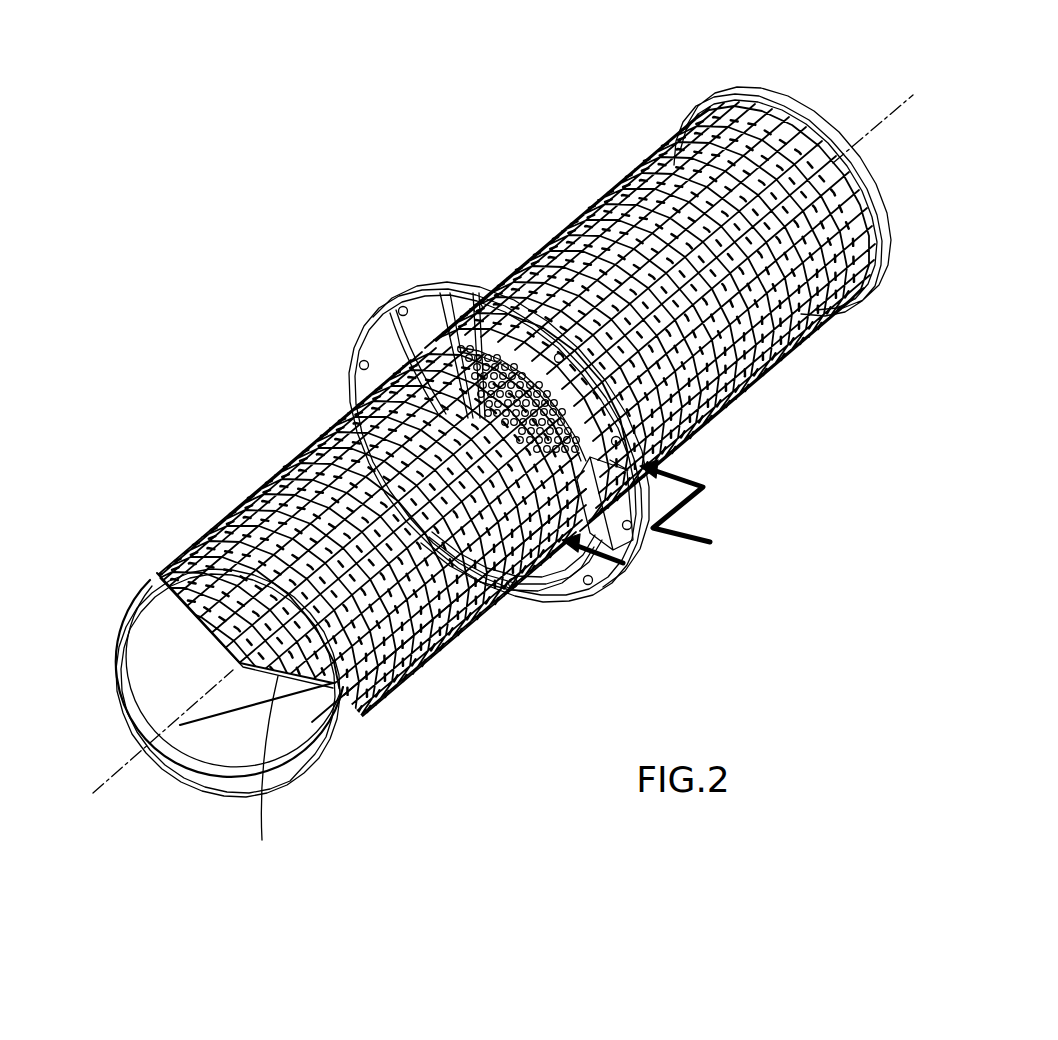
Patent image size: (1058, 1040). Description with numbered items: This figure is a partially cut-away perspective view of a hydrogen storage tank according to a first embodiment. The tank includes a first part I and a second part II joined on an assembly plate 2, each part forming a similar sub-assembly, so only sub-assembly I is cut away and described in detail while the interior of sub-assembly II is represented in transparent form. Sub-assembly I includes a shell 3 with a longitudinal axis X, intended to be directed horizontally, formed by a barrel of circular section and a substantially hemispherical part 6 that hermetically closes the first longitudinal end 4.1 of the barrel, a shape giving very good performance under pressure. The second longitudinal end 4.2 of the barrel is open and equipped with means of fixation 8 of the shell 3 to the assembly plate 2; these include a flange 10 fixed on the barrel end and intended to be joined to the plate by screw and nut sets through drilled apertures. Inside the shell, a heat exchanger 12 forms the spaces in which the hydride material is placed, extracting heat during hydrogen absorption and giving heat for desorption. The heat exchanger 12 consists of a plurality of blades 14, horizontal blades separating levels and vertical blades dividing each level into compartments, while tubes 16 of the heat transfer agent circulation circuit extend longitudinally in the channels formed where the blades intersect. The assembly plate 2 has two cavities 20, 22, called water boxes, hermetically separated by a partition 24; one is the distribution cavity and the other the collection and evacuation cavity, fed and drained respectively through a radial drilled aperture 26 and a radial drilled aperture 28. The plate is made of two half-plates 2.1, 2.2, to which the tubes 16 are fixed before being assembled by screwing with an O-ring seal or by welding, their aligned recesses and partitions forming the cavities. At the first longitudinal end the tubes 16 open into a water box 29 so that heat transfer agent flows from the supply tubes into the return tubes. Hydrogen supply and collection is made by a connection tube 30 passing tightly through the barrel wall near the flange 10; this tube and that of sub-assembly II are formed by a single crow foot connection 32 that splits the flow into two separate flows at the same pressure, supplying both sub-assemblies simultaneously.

The longitudinal axis X is at (912, 95).
The first part I is at (193, 452).
The second part II is at (860, 343).
The assembly plate 2 is at (460, 270).
The half-plate 2.1 is at (643, 483).
The half-plate 2.2 is at (653, 475).
The shell 3 is at (138, 562).
The first longitudinal end 4.1 is at (320, 763).
The second longitudinal end 4.2 is at (417, 368).
The substantially hemispherical part 6 is at (203, 773).
The means of fixation 8 is at (545, 616).
The flange 10 is at (643, 481).
The heat exchanger 12 is at (398, 618).
The blades 14 is at (467, 540).
The tubes 16 is at (235, 527).
The cavity 20 is at (443, 327).
The cavity 22 is at (585, 387).
The partition 24 is at (556, 366).
The radial drilled aperture 26 is at (445, 292).
The radial drilled aperture 28 is at (478, 292).
The water box 29 is at (263, 772).
The connection tube 30 is at (600, 563).
The crow foot connection 32 is at (712, 549).